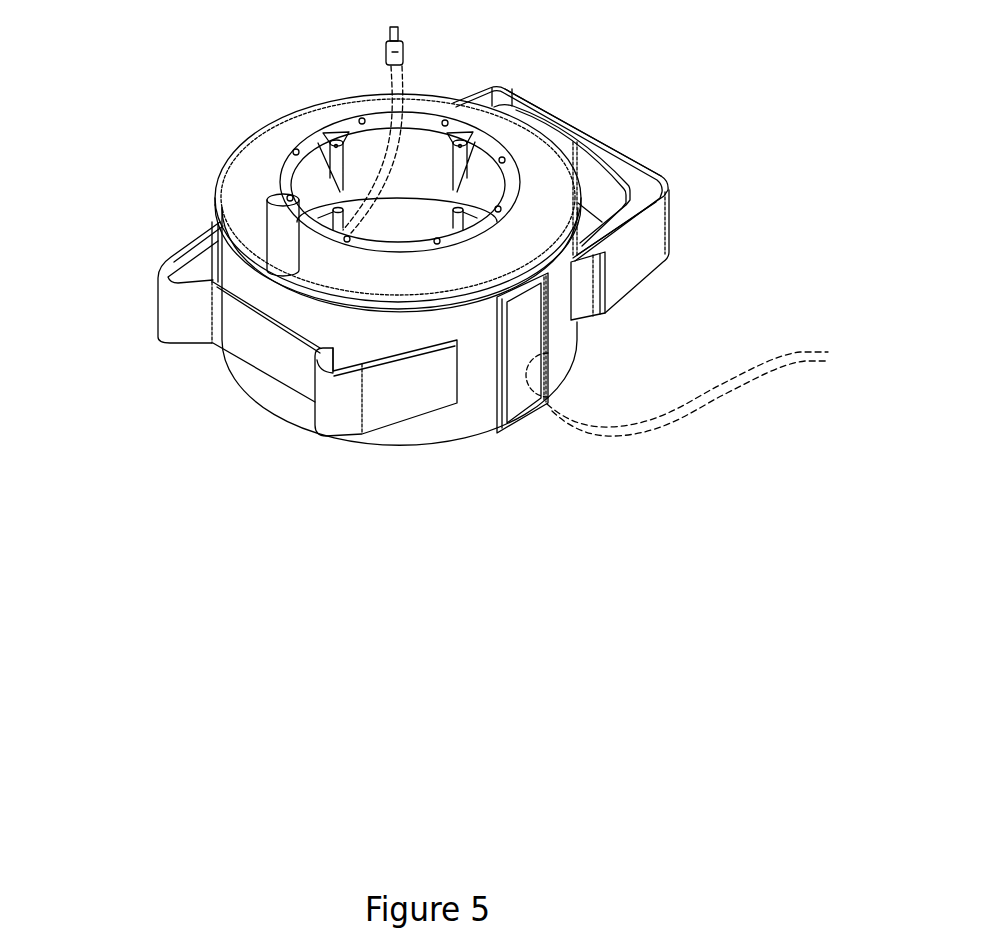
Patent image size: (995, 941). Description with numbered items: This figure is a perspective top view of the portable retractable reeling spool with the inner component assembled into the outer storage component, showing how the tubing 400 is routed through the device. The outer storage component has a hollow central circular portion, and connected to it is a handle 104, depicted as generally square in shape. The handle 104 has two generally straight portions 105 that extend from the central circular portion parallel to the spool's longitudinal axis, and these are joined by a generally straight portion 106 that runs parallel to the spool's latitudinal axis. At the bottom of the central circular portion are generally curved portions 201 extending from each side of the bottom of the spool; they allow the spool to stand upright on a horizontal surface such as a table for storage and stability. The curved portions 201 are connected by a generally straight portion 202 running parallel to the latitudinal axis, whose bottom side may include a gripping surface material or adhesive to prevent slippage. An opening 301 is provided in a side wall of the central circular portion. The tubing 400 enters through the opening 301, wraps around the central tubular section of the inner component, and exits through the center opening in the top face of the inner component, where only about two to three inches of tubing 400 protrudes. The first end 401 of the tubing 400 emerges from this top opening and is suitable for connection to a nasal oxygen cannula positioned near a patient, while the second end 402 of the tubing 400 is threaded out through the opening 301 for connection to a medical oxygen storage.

The handle 104 is at (628, 150).
The portions 105 is at (630, 288).
The portion 106 is at (558, 112).
The portions 201 is at (177, 252).
The portion 202 is at (271, 376).
The opening 301 is at (537, 416).
The tubing 400 is at (370, 180).
The first end 401 is at (382, 73).
The second end 402 is at (827, 362).